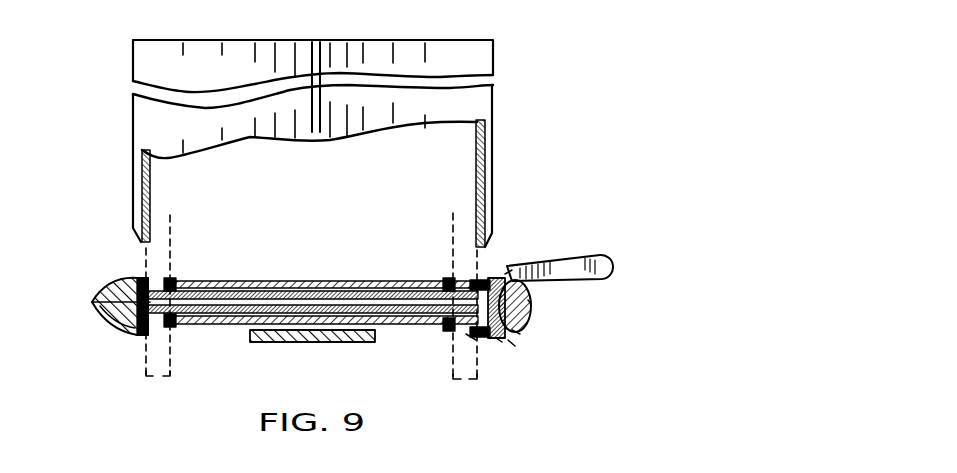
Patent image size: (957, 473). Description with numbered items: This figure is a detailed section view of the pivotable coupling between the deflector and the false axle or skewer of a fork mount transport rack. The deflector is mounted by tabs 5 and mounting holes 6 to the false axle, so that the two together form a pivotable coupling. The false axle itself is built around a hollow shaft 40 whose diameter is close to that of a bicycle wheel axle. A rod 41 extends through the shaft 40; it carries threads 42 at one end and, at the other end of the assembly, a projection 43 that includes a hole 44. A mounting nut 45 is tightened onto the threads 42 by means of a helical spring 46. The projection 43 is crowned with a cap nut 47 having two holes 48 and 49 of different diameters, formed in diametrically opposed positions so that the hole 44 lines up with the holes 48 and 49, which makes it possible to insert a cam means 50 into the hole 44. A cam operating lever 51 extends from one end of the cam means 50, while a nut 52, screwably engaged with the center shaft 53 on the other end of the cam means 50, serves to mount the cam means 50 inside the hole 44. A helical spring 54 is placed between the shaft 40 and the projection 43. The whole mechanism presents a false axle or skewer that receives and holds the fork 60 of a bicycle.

The tabs 5 is at (178, 282).
The mounting holes 6 is at (152, 357).
The hollow shaft 40 is at (180, 326).
The rod 41 is at (93, 302).
The threads 42 is at (96, 296).
The projection 43 is at (488, 278).
The hole 44 is at (530, 318).
The mounting nut 45 is at (130, 281).
The helical spring 46 is at (132, 325).
The cap nut 47 is at (530, 303).
The hole 48 is at (512, 278).
The hole 49 is at (520, 332).
The cam means 50 is at (505, 270).
The cam operating lever 51 is at (612, 266).
The nut 52 is at (500, 342).
The center shaft 53 is at (515, 345).
The helical spring 54 is at (472, 338).
The fork 60 is at (162, 376).